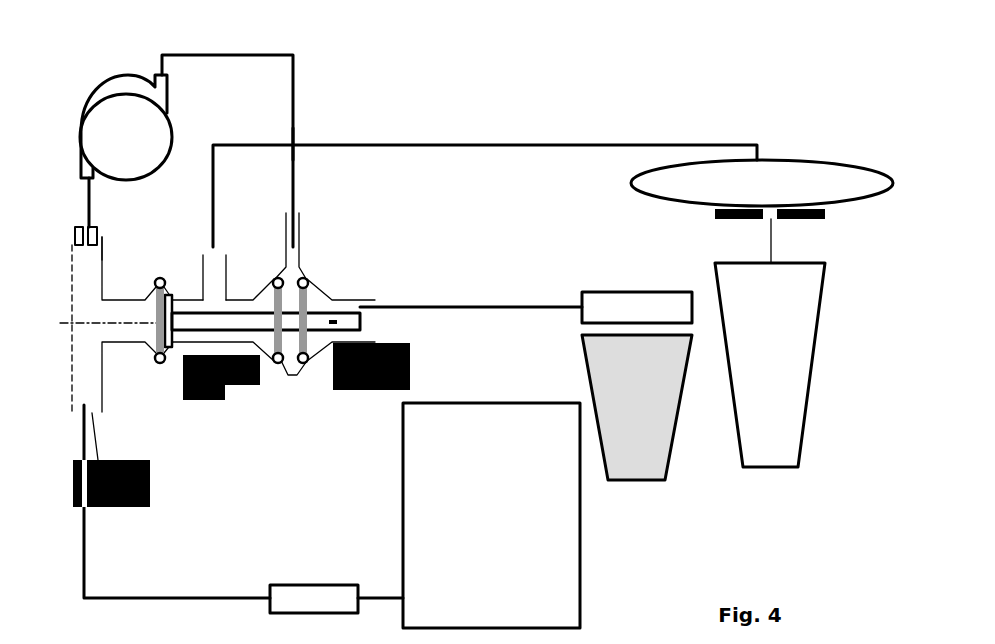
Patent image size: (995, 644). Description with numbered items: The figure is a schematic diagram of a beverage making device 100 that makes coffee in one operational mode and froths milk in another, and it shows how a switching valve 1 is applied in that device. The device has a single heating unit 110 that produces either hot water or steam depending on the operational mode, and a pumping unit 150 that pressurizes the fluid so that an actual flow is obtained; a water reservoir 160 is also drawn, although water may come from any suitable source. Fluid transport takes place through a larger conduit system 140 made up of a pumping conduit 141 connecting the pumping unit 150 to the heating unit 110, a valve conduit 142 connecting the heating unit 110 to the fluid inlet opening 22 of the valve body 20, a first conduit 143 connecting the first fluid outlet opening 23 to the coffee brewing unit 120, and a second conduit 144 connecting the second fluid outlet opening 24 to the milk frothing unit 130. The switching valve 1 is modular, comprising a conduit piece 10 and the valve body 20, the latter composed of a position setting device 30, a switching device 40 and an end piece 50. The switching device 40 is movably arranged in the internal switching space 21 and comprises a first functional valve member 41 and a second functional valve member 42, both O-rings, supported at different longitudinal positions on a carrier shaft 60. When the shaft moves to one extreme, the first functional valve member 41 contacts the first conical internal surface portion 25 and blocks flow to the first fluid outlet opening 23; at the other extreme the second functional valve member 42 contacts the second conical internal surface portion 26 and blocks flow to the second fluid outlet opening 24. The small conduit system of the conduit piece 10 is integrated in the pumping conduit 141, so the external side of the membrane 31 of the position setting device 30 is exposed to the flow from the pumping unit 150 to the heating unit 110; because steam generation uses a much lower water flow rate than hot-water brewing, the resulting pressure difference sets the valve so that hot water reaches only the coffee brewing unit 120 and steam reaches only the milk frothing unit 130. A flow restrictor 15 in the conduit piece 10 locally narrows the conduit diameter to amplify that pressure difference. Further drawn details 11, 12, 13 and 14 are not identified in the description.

The switching valve 1 is at (336, 261).
The conduit piece 10 is at (114, 428).
The lower housing part 11 is at (85, 367).
The drive unit 12 is at (111, 460).
The upper housing part 13 is at (92, 270).
The connector 14 is at (65, 220).
The flow restrictor 15 is at (99, 230).
The valve body 20 is at (221, 380).
The internal switching space 21 is at (290, 348).
The fluid inlet opening 22 is at (296, 245).
The first fluid outlet opening 23 is at (213, 260).
The second fluid outlet opening 24 is at (370, 328).
The first conical internal surface portion 25 is at (273, 278).
The second conical internal surface portion 26 is at (307, 277).
The position setting device 30 is at (169, 377).
The membrane 31 is at (160, 300).
The switching device 40 is at (275, 260).
The first functional valve member 41 is at (278, 348).
The second functional valve member 42 is at (305, 348).
The end piece 50 is at (374, 368).
The carrier shaft 60 is at (337, 323).
The beverage making device 100 is at (725, 82).
The heating unit 110 is at (108, 88).
The coffee brewing unit 120 is at (788, 182).
The milk frothing unit 130 is at (623, 305).
The conduit system 140 is at (316, 83).
The pumping conduit 141 is at (165, 597).
The valve conduit 142 is at (293, 128).
The first conduit 143 is at (478, 142).
The second conduit 144 is at (487, 305).
The pumping unit 150 is at (315, 597).
The water reservoir 160 is at (422, 492).